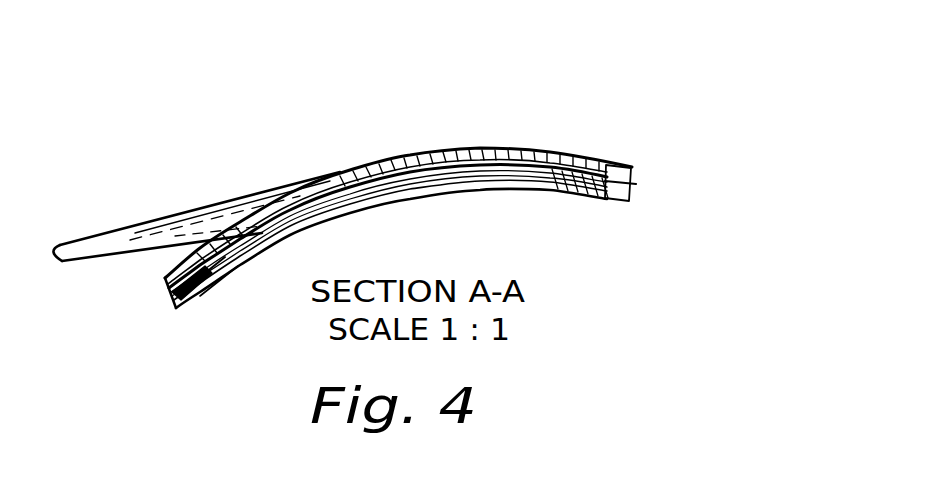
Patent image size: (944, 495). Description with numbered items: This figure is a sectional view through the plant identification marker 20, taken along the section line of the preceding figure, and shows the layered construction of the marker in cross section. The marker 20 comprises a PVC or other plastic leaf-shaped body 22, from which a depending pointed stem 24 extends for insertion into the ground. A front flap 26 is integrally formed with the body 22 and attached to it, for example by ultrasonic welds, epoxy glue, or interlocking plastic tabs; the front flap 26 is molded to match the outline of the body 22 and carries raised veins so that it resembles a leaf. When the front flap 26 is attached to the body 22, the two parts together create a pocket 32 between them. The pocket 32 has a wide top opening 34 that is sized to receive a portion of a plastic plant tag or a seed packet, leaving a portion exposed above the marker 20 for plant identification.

The plant identification marker 20 is at (455, 176).
The leaf-shaped body 22 is at (280, 246).
The depending pointed stem 24 is at (165, 213).
The front flap 26 is at (407, 157).
The pocket 32 is at (503, 158).
The wide top opening 34 is at (398, 188).